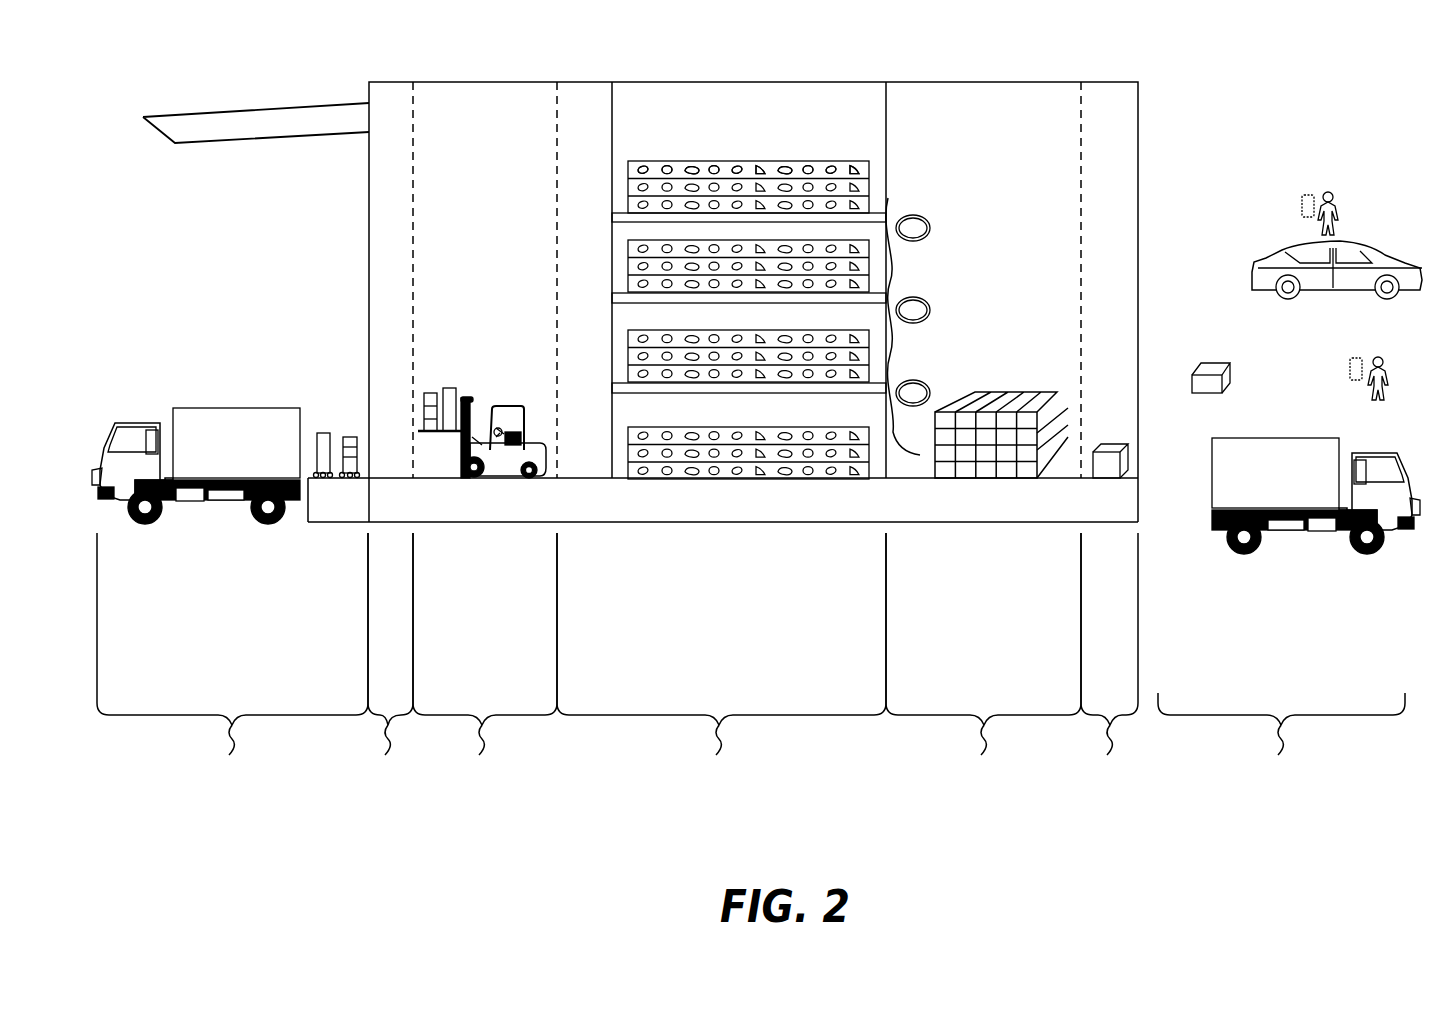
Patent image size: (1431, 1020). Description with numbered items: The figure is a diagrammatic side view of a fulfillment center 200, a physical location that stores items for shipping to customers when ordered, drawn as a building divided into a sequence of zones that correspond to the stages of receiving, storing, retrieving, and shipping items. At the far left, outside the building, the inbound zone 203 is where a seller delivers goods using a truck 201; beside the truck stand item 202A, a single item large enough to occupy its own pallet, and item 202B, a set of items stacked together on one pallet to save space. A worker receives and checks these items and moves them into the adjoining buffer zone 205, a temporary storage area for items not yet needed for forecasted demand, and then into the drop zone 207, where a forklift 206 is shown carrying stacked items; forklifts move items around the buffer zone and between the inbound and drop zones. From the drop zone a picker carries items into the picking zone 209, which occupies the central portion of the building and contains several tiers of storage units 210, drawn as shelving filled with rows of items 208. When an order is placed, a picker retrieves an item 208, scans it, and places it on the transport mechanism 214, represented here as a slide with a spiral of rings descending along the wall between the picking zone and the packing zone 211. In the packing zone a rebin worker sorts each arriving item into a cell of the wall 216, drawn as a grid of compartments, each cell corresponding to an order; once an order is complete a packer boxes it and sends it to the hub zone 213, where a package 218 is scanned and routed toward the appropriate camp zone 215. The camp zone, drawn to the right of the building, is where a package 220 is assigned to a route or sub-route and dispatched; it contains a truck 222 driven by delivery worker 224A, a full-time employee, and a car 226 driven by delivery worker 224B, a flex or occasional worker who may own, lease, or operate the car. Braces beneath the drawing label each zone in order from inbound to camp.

The fulfillment center 200 is at (803, 25).
The truck 201 is at (226, 406).
The item 202A is at (323, 432).
The item 202B is at (349, 437).
The inbound zone 203 is at (232, 671).
The buffer zone 205 is at (388, 684).
The forklift 206 is at (513, 408).
The drop zone 207 is at (485, 686).
The items 208 is at (713, 167).
The picking zone 209 is at (721, 673).
The storage units 210 is at (815, 161).
The packing zone 211 is at (983, 673).
The hub zone 213 is at (1108, 687).
The transport mechanism 214 is at (923, 213).
The camp zone 215 is at (1281, 753).
The wall 216 is at (1002, 391).
The package 218 is at (1112, 439).
The package 220 is at (1209, 359).
The truck 222 is at (1277, 448).
The delivery worker 224A is at (1378, 402).
The delivery worker 224B is at (1339, 208).
The car 226 is at (1356, 242).